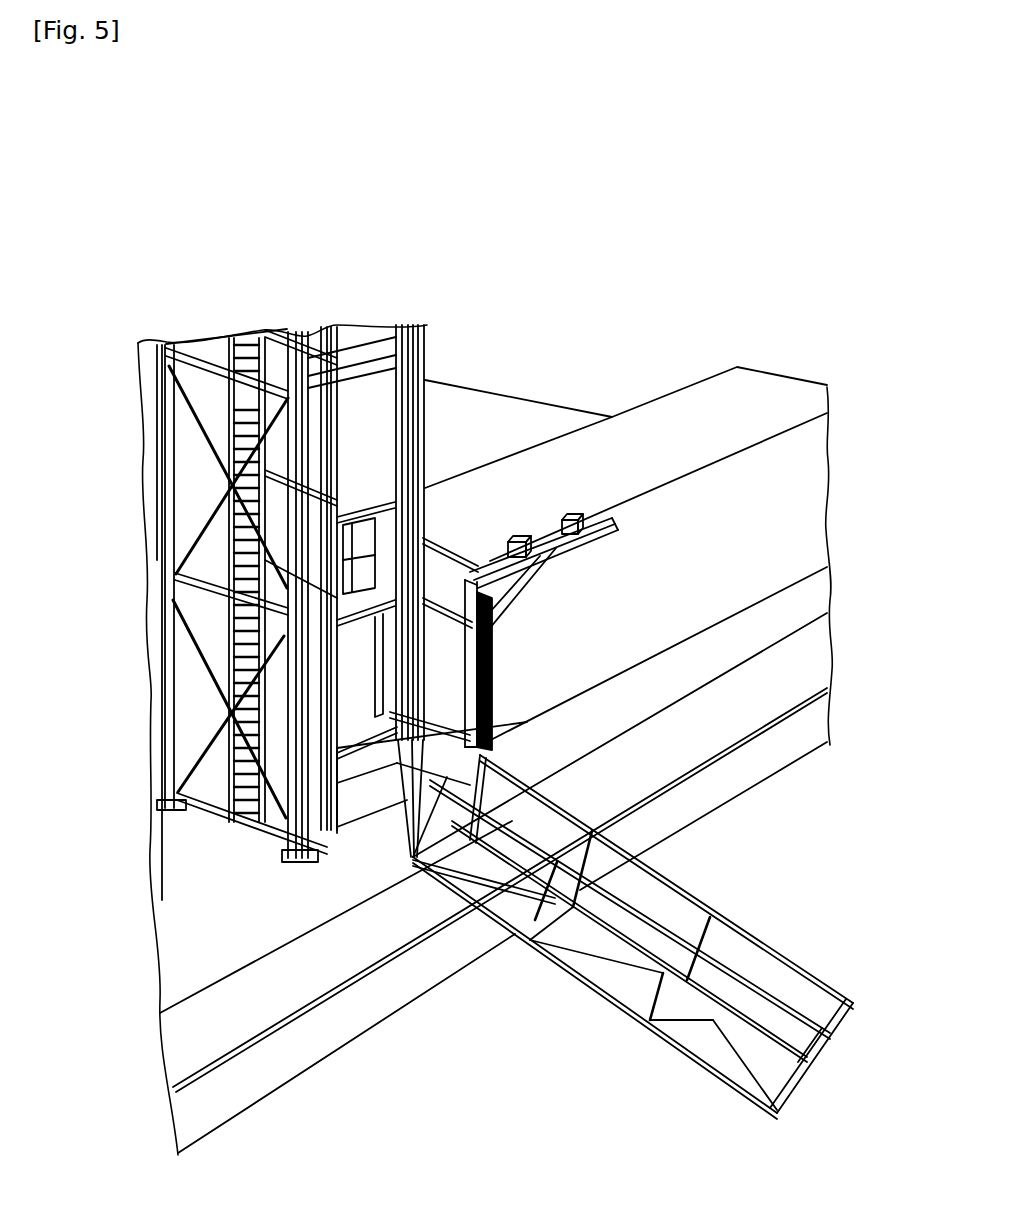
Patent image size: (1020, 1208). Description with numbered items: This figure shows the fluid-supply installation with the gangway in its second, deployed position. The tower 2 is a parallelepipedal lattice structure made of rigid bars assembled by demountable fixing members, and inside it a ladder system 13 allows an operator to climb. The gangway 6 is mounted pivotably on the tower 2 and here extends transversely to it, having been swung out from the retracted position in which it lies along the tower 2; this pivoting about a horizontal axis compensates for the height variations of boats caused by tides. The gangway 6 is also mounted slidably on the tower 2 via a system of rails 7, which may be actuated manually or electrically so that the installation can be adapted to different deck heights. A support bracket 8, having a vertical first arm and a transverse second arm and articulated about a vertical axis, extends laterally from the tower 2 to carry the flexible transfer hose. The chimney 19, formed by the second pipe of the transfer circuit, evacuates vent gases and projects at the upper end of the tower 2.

The tower 2 is at (160, 565).
The gangway 6 is at (603, 993).
The rails 7 is at (330, 463).
The support bracket 8 is at (593, 547).
The ladder system 13 is at (203, 813).
The chimney 19 is at (180, 750).